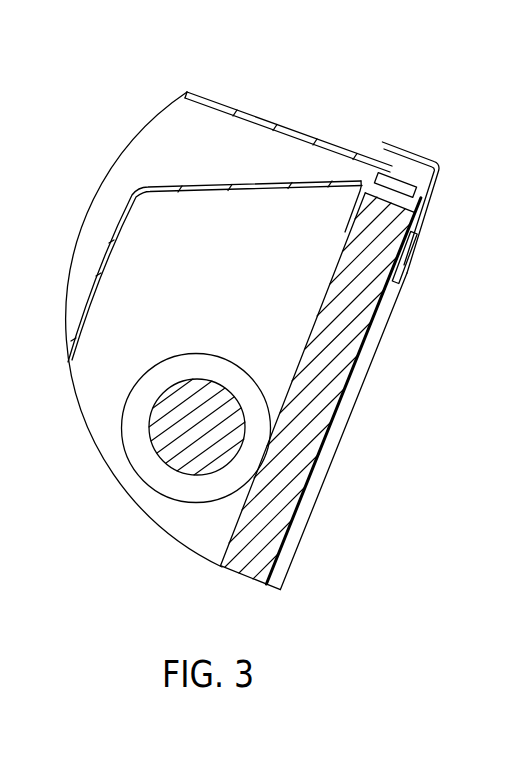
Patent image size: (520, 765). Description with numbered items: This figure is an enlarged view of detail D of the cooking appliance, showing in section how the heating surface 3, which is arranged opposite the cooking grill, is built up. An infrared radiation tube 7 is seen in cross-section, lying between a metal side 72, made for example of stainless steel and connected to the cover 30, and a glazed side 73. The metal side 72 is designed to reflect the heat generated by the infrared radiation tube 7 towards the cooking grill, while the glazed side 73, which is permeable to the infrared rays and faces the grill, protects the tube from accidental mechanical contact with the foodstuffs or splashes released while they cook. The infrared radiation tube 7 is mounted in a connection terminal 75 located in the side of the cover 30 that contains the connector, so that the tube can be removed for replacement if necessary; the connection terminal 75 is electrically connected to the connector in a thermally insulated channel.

The heating surface 3 is at (401, 297).
The infrared radiation tube 7 is at (207, 446).
The cover 30 is at (327, 143).
The metal side 72 is at (255, 183).
The glazed side 73 is at (330, 387).
The connection terminal 75 is at (283, 566).
The detail D is at (137, 518).